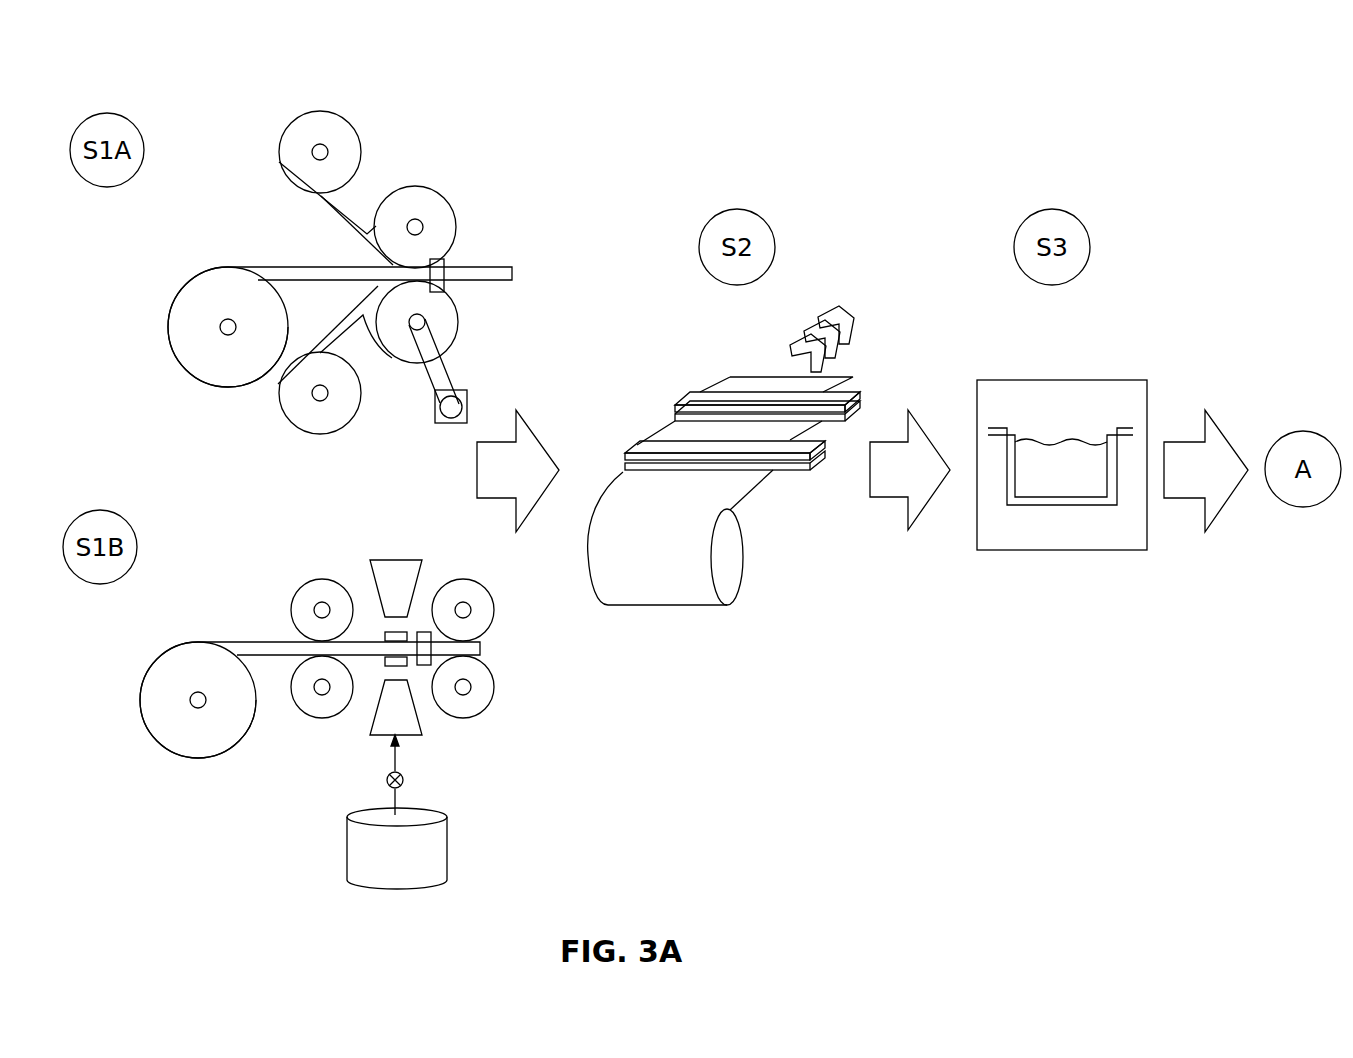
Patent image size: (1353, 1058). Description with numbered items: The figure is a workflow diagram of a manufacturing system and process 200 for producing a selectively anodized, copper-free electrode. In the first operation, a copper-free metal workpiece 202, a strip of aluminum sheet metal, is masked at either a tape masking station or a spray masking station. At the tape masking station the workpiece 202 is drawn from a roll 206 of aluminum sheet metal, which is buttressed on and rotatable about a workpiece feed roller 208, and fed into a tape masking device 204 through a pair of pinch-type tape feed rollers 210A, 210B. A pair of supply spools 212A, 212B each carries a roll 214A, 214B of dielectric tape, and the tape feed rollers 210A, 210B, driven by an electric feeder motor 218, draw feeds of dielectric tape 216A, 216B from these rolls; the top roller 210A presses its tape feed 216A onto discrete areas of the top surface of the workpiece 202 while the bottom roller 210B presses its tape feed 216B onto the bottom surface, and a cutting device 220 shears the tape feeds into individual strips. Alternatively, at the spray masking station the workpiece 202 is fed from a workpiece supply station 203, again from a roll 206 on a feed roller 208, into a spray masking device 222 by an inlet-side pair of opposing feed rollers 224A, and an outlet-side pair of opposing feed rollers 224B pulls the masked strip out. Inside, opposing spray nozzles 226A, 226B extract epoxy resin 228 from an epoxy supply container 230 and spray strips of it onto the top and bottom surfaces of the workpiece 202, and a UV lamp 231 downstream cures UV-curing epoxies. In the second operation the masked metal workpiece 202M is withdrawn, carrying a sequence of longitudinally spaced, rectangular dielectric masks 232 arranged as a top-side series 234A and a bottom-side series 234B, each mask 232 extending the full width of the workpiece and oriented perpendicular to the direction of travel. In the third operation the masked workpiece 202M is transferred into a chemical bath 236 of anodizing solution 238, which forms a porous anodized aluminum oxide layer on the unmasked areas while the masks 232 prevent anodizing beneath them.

The manufacturing system/process 200 is at (895, 70).
The copper-free metal workpiece 202 is at (497, 268).
The masked metal workpiece 202M is at (818, 282).
The workpiece supply station 203 is at (148, 316).
The tape masking device 204 is at (416, 110).
The roll of aluminum sheet metal 206 is at (172, 282).
The workpiece feed roller 208 is at (226, 319).
The first tape feed roller 210A is at (443, 196).
The second tape feed roller 210B is at (455, 332).
The first supply spool 212A is at (313, 156).
The second supply spool 212B is at (316, 401).
The first roll of dielectric tape 214A is at (290, 128).
The second roll of dielectric tape 214B is at (283, 402).
The first feed of dielectric tape 216A is at (352, 224).
The second feed of dielectric tape 216B is at (343, 338).
The electric feeder motor 218 is at (436, 420).
The cutting device 220 is at (446, 285).
The spray masking device 222 is at (402, 536).
The inlet-side pair of opposing feed rollers 224A is at (320, 740).
The outlet-side pair of opposing feed rollers 224B is at (483, 728).
The first spray nozzle 226A is at (373, 580).
The second spray nozzle 226B is at (375, 737).
The epoxy resin 228 is at (360, 843).
The reservoir 230 is at (347, 872).
The UV lamp 231 is at (427, 666).
The dielectric mask 232 is at (680, 398).
The top-side series of dielectric masks 234A is at (705, 372).
The bottom-side series of dielectric masks 234B is at (759, 535).
The chemical bath 236 is at (1003, 426).
The anodizing solution 238 is at (1045, 483).